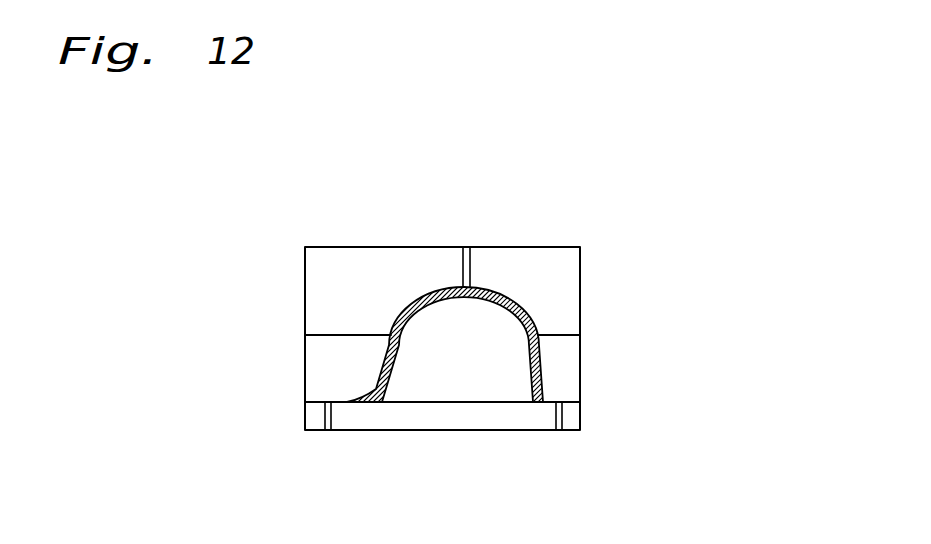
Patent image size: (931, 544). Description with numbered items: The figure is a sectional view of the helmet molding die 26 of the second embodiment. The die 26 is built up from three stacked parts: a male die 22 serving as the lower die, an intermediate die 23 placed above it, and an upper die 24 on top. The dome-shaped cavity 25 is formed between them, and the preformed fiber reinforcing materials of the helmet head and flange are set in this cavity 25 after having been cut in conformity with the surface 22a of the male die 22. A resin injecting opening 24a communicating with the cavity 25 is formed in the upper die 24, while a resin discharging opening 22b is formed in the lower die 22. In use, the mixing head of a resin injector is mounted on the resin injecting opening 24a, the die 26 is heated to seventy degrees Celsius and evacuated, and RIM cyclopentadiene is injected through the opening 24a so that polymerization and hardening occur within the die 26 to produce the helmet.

The male die 22 is at (382, 420).
The surface of the male die 22a is at (329, 432).
The resin discharging opening 22b is at (559, 432).
The intermediate die 23 is at (317, 372).
The upper die 24 is at (317, 298).
The resin injecting opening 24a is at (470, 247).
The cavity 25 is at (517, 302).
The die 26 is at (588, 273).